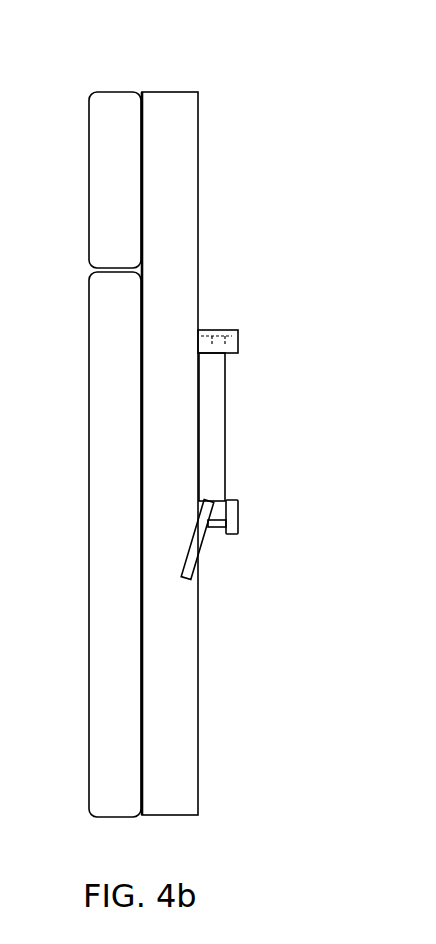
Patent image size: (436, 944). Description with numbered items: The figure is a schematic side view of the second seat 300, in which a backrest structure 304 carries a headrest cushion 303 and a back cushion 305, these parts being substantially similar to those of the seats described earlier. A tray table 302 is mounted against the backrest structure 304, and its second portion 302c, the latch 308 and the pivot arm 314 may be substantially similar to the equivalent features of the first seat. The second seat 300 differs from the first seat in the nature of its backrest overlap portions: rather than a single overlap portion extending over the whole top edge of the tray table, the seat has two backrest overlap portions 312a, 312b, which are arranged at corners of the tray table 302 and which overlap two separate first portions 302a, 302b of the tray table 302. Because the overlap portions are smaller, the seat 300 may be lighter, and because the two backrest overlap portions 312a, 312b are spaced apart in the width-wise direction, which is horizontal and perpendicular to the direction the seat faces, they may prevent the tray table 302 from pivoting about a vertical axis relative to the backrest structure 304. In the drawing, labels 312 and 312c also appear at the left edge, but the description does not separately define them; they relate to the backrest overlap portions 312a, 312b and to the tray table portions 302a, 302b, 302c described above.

The second seat 300 is at (133, 68).
The headrest cushion 303 is at (102, 157).
The backrest structure 304 is at (180, 182).
The back cushion 305 is at (100, 662).
The tray table 302 is at (219, 412).
The first portion of the tray table 302b is at (212, 330).
The backrest overlap portion 312b is at (238, 330).
The second portion of the tray table 302c is at (223, 499).
The latch 308 is at (240, 512).
The pivot arm 314 is at (199, 540).
The first portion of the tray table 302a is at (10, 199).
The backrest overlap portion 312a is at (10, 266).
The bracket 312 is at (5, 344).
The bracket portion 312c is at (7, 428).